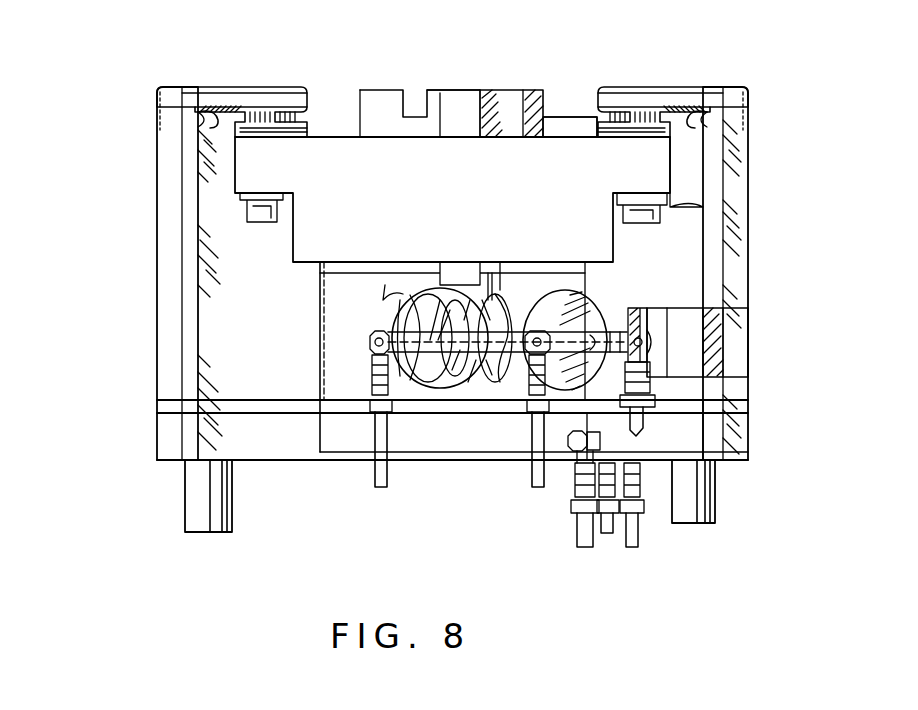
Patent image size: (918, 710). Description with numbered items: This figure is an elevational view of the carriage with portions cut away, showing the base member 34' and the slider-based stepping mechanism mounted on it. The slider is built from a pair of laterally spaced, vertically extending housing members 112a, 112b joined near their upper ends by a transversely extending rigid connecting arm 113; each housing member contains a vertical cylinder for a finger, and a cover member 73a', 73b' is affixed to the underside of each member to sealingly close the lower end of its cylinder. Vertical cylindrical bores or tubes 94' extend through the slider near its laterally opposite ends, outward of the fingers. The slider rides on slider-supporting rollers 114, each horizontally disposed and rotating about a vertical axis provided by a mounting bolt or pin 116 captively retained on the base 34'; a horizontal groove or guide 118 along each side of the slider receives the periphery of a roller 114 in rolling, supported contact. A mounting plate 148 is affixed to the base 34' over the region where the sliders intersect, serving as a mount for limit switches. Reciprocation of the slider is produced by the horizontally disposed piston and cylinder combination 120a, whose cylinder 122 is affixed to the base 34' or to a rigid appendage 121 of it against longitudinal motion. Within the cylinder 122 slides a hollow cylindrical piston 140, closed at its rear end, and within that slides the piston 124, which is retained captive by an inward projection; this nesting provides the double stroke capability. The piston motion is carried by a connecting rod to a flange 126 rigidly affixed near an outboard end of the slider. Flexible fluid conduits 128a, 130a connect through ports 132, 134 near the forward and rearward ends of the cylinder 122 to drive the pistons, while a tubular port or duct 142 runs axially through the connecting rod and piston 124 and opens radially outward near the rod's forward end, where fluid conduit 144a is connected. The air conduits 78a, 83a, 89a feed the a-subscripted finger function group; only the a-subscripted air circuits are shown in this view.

The base member 34' is at (452, 156).
The slider-supporting roller 114 is at (270, 110).
The groove or guide 118 is at (217, 128).
The mounting plate 148 is at (440, 93).
The connecting arm 113 is at (570, 123).
The mounting bolt or pin 116 is at (663, 203).
The housing member 112a is at (697, 252).
The housing member 112b is at (207, 342).
The piston and cylinder combination 120a is at (383, 300).
The piston 124 is at (447, 297).
The rigid appendage 121 is at (455, 272).
The cylinder 122 is at (553, 300).
The hollow cylindrical piston 140 is at (492, 273).
The port 134 is at (374, 335).
The port 132 is at (580, 317).
The tubular port or duct 142 is at (643, 330).
The flange 126 is at (697, 363).
The cover member 73b' is at (411, 430).
The cover member 73a' is at (770, 435).
The fluid conduit 144a is at (650, 428).
The vertical cylindrical bore or tube 94' is at (443, 496).
The flexible fluid conduit 130a is at (373, 475).
The flexible fluid conduit 128a is at (533, 477).
The air conduit 83a is at (577, 533).
The air conduit 78a is at (603, 547).
The air conduit 89a is at (643, 540).